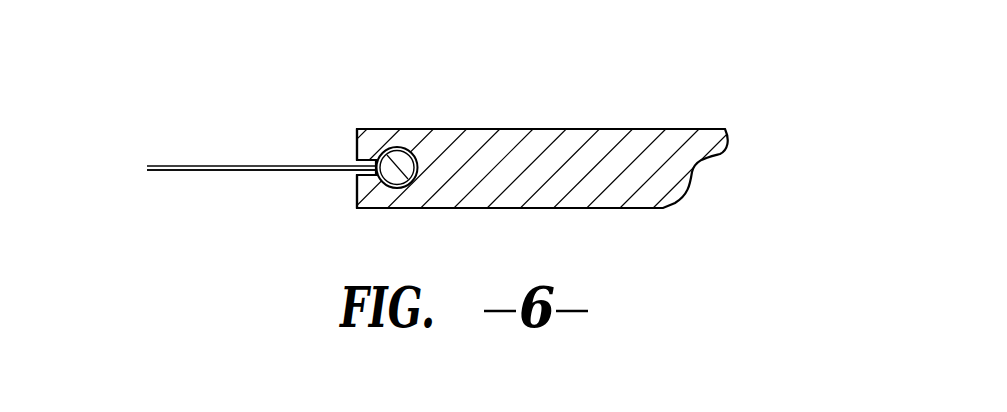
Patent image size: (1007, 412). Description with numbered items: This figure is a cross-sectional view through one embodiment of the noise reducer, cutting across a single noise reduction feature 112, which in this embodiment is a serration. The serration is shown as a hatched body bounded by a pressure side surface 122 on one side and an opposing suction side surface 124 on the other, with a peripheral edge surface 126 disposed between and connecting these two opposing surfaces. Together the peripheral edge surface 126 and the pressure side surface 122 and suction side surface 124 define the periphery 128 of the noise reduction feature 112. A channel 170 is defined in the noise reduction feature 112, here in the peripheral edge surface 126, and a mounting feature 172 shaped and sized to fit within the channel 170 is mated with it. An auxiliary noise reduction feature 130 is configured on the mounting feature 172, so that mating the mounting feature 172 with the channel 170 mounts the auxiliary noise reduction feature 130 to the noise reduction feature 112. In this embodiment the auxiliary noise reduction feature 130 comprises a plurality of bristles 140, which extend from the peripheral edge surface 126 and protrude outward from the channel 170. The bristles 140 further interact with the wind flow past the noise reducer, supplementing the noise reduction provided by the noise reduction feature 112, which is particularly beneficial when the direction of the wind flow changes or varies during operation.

The noise reduction feature 112 is at (262, 76).
The pressure side surface 122 is at (633, 208).
The suction side surface 124 is at (612, 129).
The peripheral edge surface 126 is at (356, 145).
The periphery 128 is at (356, 194).
The auxiliary noise reduction feature 130 is at (232, 173).
The bristles 140 is at (268, 165).
The channel 170 is at (386, 146).
The mounting feature 172 is at (403, 158).